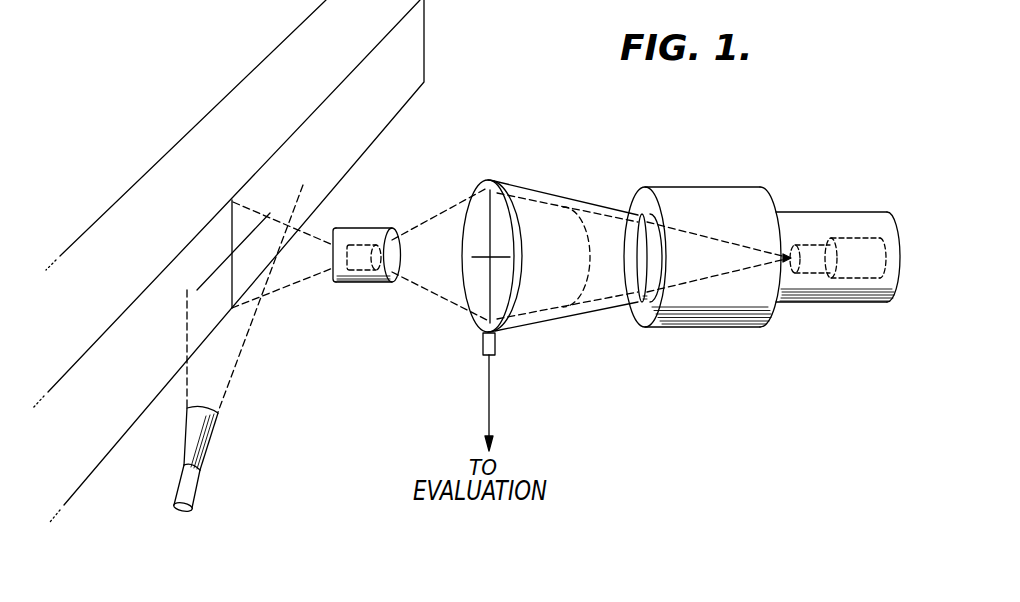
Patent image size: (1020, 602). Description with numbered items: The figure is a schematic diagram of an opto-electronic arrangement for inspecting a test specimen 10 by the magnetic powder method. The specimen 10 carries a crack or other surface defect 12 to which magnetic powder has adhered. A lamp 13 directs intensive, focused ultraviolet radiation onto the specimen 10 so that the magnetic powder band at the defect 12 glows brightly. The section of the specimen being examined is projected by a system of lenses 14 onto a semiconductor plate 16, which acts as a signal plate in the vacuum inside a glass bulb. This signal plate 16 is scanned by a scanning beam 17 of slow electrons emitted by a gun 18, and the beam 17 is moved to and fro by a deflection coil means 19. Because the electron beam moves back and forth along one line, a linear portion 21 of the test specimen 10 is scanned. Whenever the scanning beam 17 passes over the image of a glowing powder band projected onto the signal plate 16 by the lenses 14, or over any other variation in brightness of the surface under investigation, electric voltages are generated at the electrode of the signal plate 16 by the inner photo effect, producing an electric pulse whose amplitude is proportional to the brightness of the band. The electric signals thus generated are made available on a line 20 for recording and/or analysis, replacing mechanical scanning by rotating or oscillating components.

The test specimen 10 is at (284, 44).
The surface defect 12 is at (208, 277).
The lamp 13 is at (213, 440).
The system of lenses 14 is at (357, 284).
The semiconductor plate 16 is at (487, 180).
The scanning beam 17 is at (586, 253).
The gun 18 is at (847, 237).
The deflection coil means 19 is at (717, 190).
The line 20 is at (490, 407).
The linear portion 21 is at (230, 224).